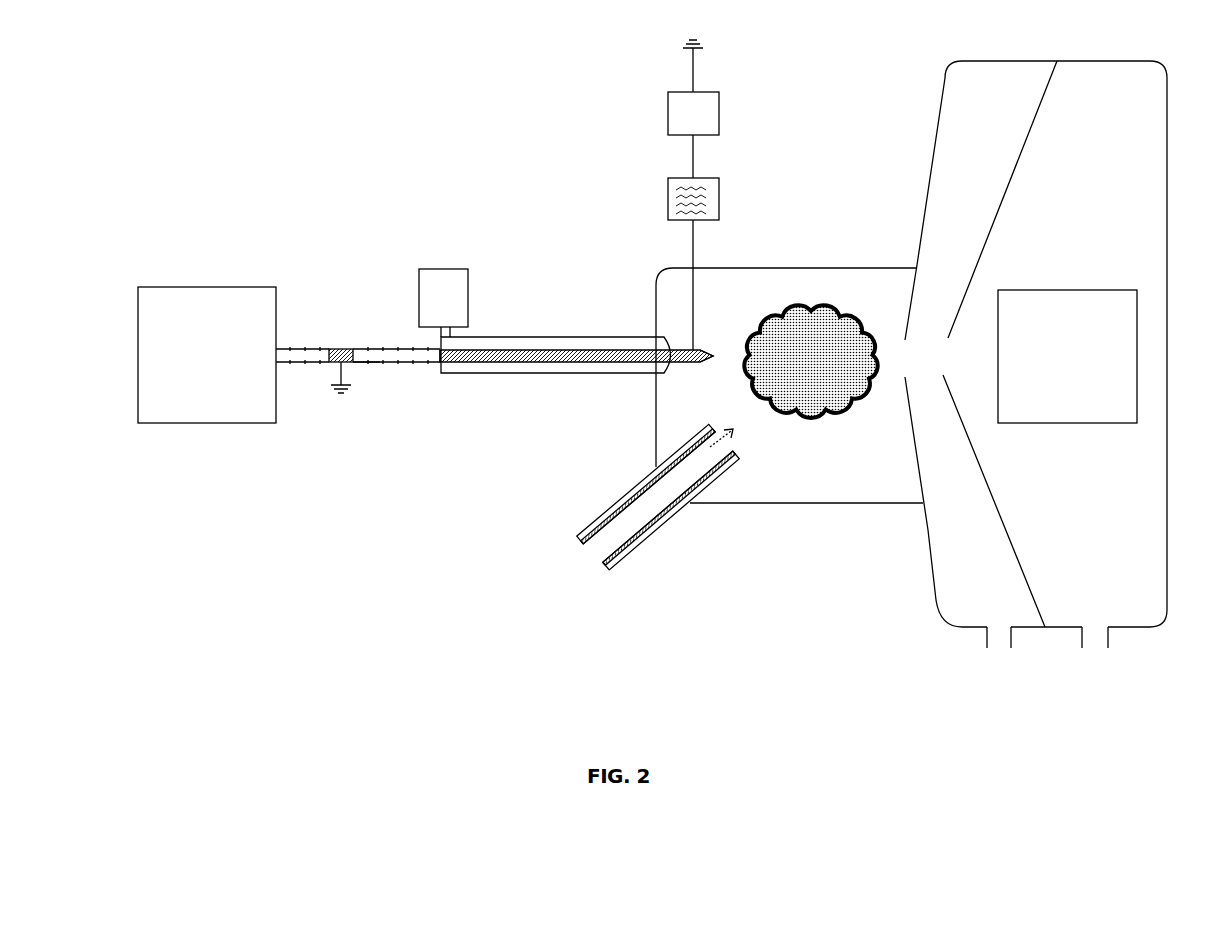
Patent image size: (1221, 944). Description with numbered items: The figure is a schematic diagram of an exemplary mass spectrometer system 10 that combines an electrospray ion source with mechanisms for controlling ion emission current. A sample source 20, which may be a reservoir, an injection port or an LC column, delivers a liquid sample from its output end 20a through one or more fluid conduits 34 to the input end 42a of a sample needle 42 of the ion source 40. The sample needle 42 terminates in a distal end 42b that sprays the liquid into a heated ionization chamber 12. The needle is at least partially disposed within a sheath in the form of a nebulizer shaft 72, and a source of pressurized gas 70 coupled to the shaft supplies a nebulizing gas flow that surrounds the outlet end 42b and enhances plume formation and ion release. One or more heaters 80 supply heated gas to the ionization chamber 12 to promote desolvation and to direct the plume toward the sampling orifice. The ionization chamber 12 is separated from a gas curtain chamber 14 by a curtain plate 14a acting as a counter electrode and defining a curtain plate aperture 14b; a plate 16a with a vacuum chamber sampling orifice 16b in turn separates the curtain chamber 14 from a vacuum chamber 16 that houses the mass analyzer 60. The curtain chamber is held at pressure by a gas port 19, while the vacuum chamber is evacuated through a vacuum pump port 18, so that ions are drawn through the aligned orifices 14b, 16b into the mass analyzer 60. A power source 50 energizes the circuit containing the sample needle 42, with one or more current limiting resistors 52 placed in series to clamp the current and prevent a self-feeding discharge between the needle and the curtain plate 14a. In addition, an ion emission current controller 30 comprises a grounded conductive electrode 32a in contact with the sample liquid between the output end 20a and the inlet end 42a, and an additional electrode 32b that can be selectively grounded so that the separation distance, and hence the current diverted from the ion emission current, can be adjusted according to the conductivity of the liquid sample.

The mass spectrometer system 10 is at (316, 101).
The ionization chamber 12 is at (903, 304).
The gas curtain chamber 14 is at (1016, 92).
The curtain plate 14a is at (933, 158).
The curtain plate aperture 14b is at (894, 353).
The vacuum chamber 16 is at (1114, 92).
The plate 16a is at (1048, 88).
The vacuum chamber sampling orifice 16b is at (935, 358).
The vacuum pump port 18 is at (1102, 654).
The gas port 19 is at (998, 650).
The sample source 20 is at (207, 355).
The output end 20a is at (278, 346).
The ion emission current controller 30 is at (339, 334).
The conductive electrode 32a is at (356, 364).
The additional electrode 32b is at (378, 348).
The fluid conduit 34 is at (328, 364).
The ion source 40 is at (590, 428).
The sample needle 42 is at (621, 349).
The input end 42a is at (440, 364).
The distal end 42b is at (712, 352).
The power source 50 is at (693, 113).
The current limiting resistor 52 is at (668, 195).
The mass analyzer 60 is at (1067, 356).
The source of pressurized gas 70 is at (443, 303).
The nebulizer shaft 72 is at (527, 374).
The heater 80 is at (663, 527).